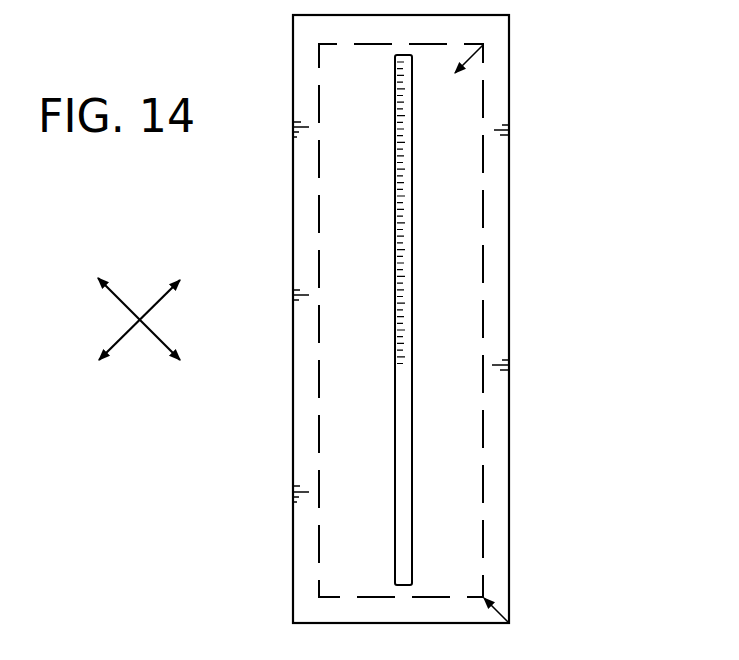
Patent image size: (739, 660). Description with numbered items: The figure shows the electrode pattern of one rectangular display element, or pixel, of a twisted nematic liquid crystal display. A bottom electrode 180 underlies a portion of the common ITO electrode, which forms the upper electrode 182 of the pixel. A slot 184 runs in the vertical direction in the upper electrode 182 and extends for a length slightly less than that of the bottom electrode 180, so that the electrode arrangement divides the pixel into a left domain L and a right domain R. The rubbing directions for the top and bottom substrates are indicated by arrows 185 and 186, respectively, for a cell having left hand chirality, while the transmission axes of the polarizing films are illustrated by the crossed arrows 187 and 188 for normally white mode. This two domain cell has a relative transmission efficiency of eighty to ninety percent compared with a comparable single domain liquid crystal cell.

The bottom electrode 180 is at (483, 210).
The upper electrode 182 is at (509, 304).
The slot 184 is at (403, 412).
The arrow (rubbing direction of top substrate) 185 is at (500, 608).
The arrow (rubbing direction of bottom substrate) 186 is at (476, 54).
The arrow (polarizer transmission axis) 187 is at (160, 339).
The arrow (polarizer transmission axis) 188 is at (126, 340).